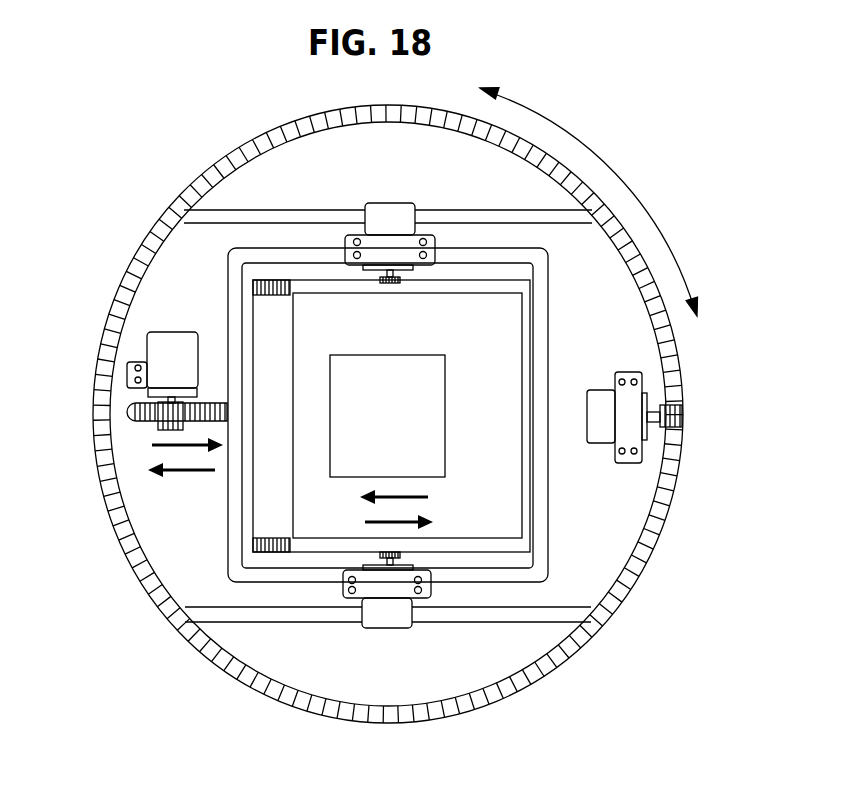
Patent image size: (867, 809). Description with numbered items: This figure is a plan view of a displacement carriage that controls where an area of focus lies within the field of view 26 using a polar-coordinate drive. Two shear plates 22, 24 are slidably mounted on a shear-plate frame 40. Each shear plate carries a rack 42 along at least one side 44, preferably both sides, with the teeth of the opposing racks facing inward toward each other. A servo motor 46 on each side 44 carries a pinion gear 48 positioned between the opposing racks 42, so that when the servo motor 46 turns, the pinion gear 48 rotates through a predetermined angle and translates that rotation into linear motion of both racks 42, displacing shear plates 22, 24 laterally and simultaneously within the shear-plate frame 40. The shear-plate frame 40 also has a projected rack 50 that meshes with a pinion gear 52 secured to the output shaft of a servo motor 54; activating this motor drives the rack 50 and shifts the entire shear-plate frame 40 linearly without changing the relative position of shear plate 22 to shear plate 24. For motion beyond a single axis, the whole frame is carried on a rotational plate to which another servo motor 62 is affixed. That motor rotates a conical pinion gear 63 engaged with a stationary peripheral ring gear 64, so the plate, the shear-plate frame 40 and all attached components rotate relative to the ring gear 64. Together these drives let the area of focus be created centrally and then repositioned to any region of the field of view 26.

The shear plate 22 is at (466, 331).
The shear plate 24 is at (260, 376).
The field of view 26 is at (438, 401).
The shear-plate frame 40 is at (541, 307).
The rack 42 is at (253, 282).
The side 44 is at (503, 276).
The servo motor 46 is at (392, 213).
The pinion gear 48 is at (400, 280).
The projected rack 50 is at (212, 404).
The pinion gear 52 is at (162, 426).
The servo motor 54 is at (162, 341).
The servo motor 62 is at (597, 395).
The conical pinion gear 63 is at (681, 407).
The peripheral ring gear 64 is at (672, 347).